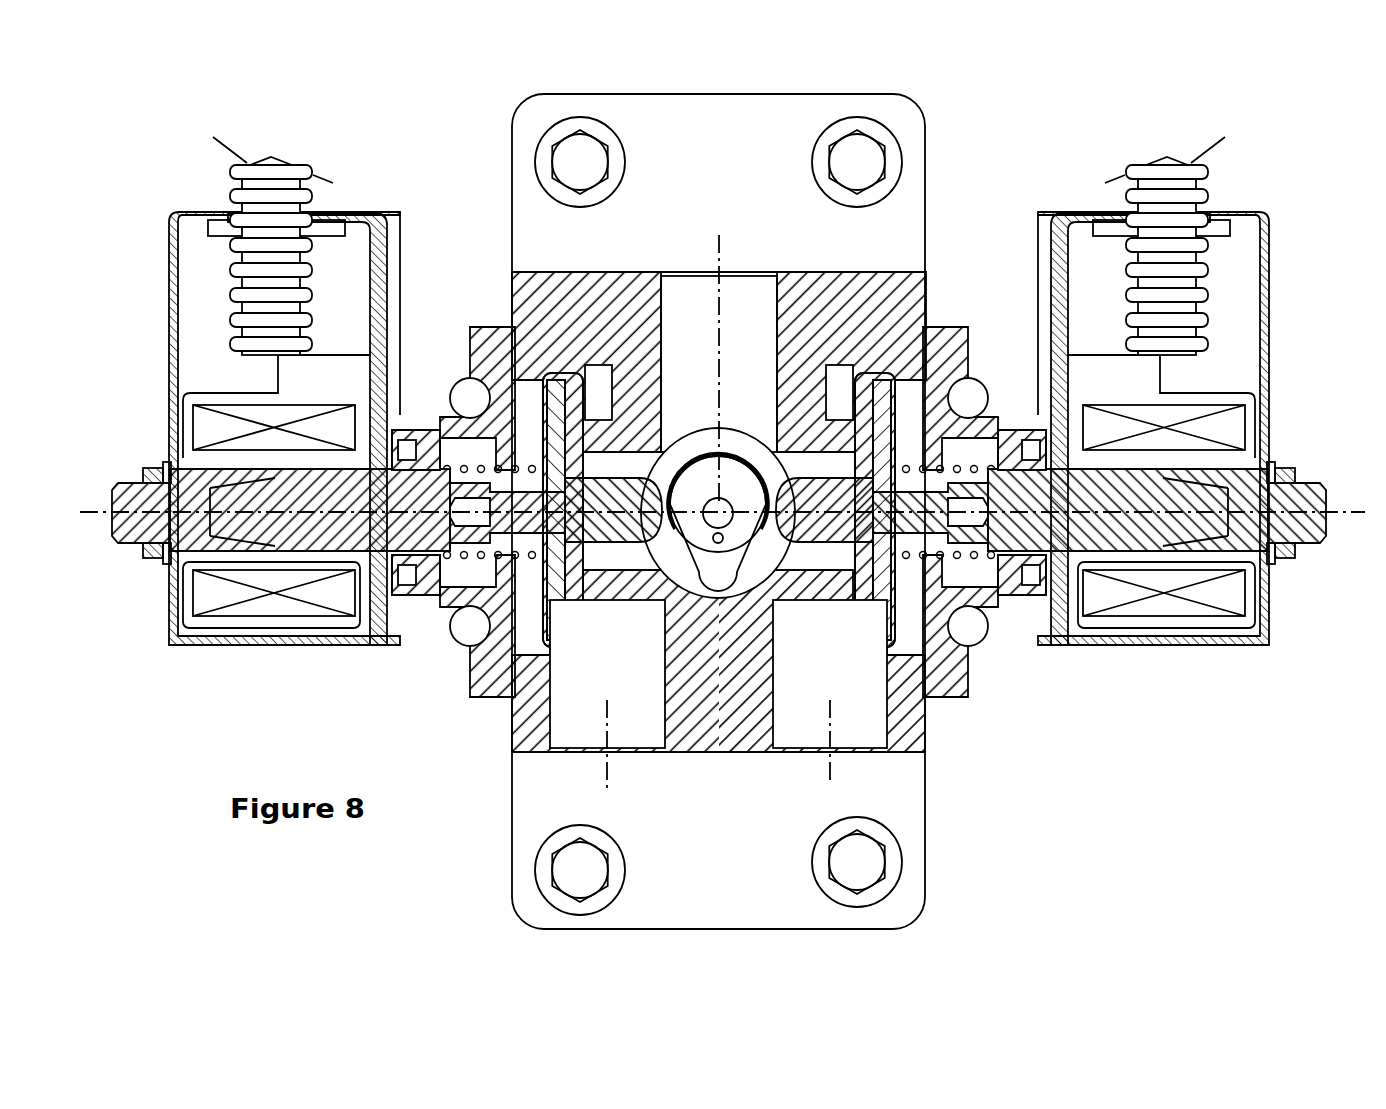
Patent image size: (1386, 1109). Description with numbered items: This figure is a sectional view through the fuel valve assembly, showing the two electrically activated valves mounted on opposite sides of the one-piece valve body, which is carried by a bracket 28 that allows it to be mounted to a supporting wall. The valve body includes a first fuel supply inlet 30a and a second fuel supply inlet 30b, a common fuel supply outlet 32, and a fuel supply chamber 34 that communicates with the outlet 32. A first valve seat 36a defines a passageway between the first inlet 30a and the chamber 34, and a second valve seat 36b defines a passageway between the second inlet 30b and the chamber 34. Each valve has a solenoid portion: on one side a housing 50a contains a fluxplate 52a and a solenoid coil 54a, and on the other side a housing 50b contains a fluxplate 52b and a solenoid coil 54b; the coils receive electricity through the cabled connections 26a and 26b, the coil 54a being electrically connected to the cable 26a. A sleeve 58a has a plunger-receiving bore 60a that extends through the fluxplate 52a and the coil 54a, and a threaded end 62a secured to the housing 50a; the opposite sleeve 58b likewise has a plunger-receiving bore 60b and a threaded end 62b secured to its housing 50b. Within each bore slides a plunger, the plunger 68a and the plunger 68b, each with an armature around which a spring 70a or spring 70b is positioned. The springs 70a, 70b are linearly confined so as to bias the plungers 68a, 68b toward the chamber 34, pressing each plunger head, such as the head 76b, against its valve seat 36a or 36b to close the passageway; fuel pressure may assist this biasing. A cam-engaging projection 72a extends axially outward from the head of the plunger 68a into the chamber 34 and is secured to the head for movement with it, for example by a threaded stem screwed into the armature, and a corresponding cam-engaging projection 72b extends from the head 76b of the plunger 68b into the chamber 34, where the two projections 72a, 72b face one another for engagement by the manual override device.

The bracket 28 is at (752, 112).
The cabled connection 26a is at (1193, 192).
The cabled connection 26b is at (230, 177).
The first fuel supply inlet 30a is at (630, 695).
The second fuel supply inlet 30b is at (843, 695).
The fuel supply outlet 32 is at (762, 313).
The fuel supply chamber 34 is at (714, 456).
The first valve seat 36a is at (865, 420).
The second valve seat 36b is at (595, 445).
The housing 50a is at (1268, 283).
The housing 50b is at (170, 322).
The fluxplate 52a is at (1052, 264).
The fluxplate 52b is at (384, 272).
The solenoid coil 54a is at (1262, 423).
The solenoid coil 54b is at (212, 433).
The sleeve 58a is at (1258, 548).
The sleeve 58b is at (177, 548).
The plunger-receiving bore 60a is at (1220, 527).
The plunger-receiving bore 60b is at (218, 530).
The threaded end 62a is at (1323, 527).
The threaded end 62b is at (127, 528).
The plunger 68a is at (1047, 537).
The plunger 68b is at (367, 633).
The spring 70a is at (943, 400).
The spring 70b is at (467, 383).
The cam-engaging projection 72a is at (852, 510).
The cam-engaging projection 72b is at (640, 510).
The head 76b is at (565, 383).